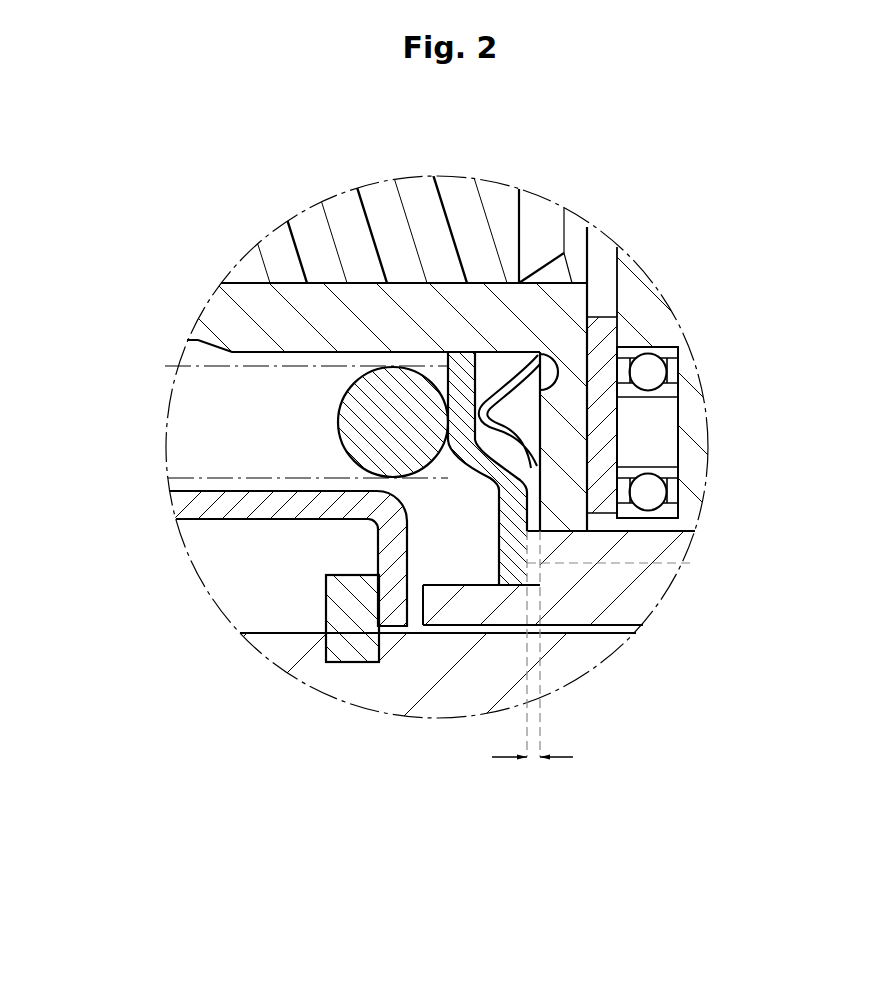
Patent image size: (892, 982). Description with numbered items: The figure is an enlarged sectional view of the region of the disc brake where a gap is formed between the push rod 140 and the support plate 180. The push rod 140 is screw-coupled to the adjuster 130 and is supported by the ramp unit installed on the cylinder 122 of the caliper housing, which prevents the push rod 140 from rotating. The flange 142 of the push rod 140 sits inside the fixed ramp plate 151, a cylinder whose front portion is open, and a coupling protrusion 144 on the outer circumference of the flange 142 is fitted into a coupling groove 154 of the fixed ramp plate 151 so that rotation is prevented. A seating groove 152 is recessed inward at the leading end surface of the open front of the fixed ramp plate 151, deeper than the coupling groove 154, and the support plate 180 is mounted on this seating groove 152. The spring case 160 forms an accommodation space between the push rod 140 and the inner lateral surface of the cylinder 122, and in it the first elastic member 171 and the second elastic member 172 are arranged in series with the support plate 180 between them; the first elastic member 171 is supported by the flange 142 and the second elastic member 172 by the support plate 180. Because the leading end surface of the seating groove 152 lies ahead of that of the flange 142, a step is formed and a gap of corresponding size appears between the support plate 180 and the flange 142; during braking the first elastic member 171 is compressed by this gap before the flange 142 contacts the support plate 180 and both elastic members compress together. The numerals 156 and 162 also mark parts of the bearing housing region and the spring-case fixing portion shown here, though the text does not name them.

The cylinder 122 is at (381, 690).
The adjuster 130 is at (281, 248).
The push rod 140 is at (230, 320).
The flange 142 is at (565, 448).
The coupling protrusion 144 is at (535, 532).
The fixed ramp plate 151 is at (643, 590).
The seating groove 152 is at (526, 586).
The coupling groove 154 is at (580, 559).
The bearing housing 156 is at (650, 313).
The spring case 160 is at (193, 507).
The fixing portion 162 is at (340, 651).
The first elastic member 171 is at (515, 377).
The second elastic member 172 is at (372, 430).
The support plate 180 is at (477, 466).